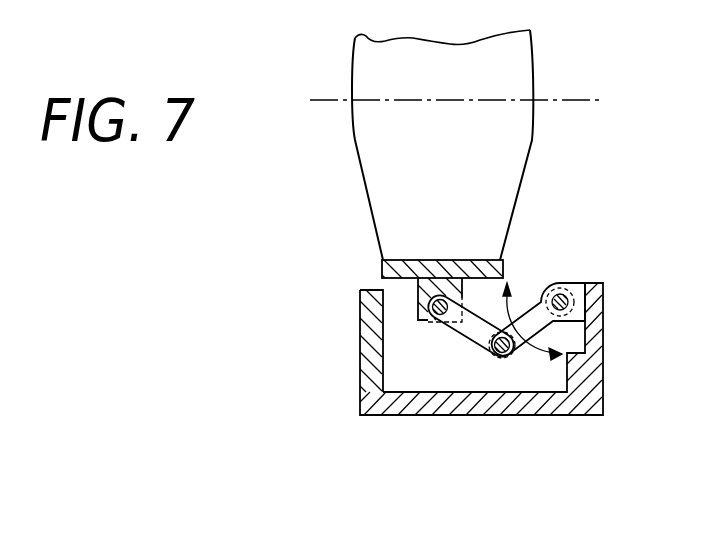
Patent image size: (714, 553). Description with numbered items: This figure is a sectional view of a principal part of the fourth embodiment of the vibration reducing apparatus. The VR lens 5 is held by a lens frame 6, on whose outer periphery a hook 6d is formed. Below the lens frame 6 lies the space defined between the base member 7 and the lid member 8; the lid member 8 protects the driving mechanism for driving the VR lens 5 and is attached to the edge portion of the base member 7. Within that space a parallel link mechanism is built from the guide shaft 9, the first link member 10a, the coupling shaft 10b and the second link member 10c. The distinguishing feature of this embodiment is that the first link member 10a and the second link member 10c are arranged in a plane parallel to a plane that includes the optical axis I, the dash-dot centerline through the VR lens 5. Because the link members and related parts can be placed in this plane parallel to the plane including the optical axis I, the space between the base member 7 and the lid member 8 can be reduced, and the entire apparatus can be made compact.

The optical axis I is at (328, 98).
The VR lens 5 is at (357, 170).
The lens frame 6 is at (383, 268).
The hook 6d is at (417, 300).
The base member 7 is at (603, 335).
The lid member 8 is at (360, 332).
The guide shaft 9 is at (443, 322).
The first link member 10a is at (458, 333).
The coupling shaft 10b is at (497, 358).
The second link member 10c is at (531, 302).